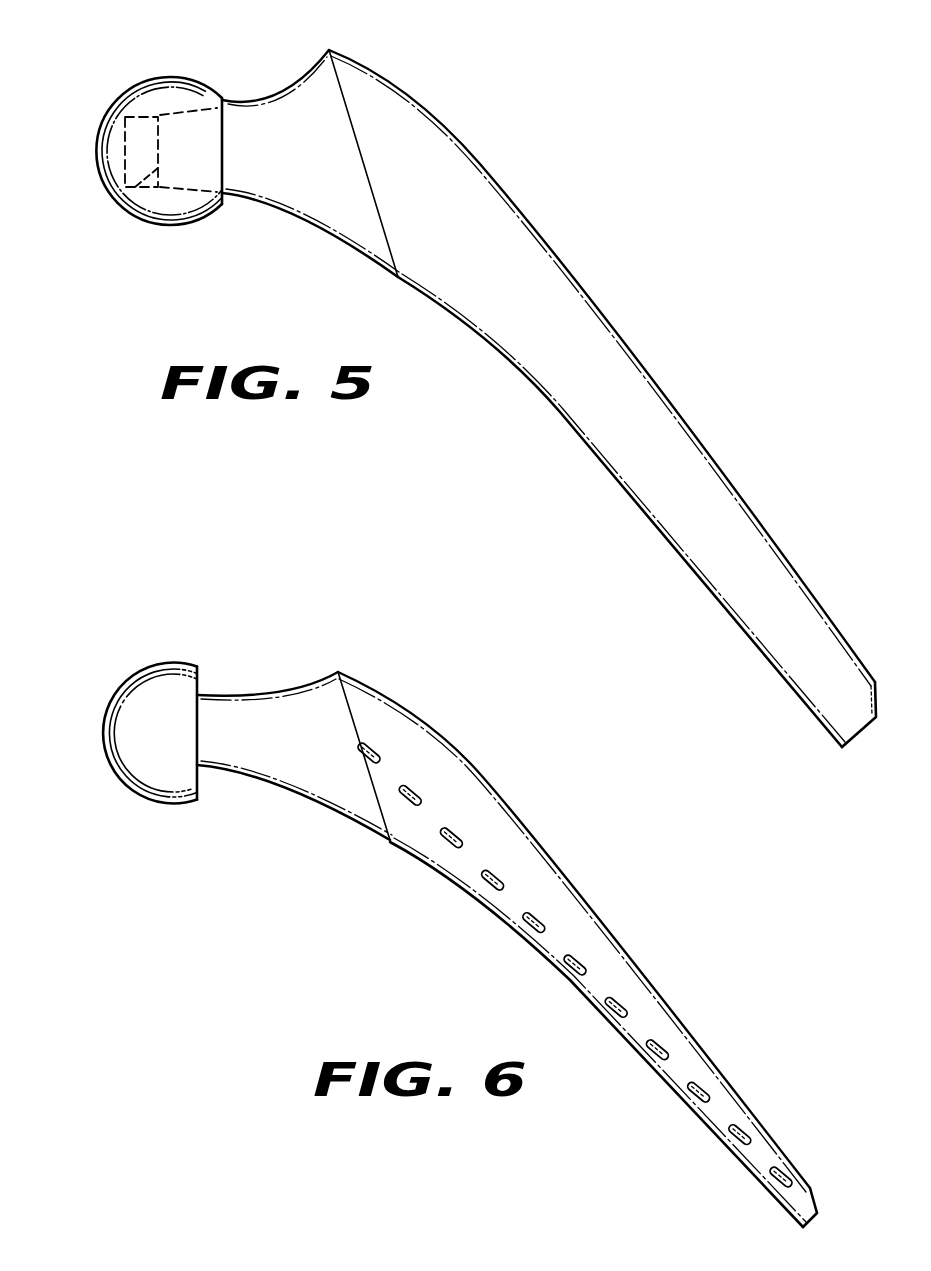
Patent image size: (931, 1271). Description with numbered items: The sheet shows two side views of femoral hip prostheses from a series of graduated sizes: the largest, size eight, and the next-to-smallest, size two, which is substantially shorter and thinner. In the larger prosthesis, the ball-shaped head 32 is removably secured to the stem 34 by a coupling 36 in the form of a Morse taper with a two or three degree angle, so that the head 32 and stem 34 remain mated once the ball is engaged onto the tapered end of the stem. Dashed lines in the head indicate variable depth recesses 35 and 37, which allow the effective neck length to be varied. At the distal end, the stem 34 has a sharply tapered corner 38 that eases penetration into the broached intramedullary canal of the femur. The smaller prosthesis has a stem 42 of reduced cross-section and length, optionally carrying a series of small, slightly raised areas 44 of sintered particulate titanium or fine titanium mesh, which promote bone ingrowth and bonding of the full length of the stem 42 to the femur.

In FIG. 5, the head 32 is at (133, 87).
In FIG. 5, the stem 34 is at (410, 97).
In FIG. 5, the variable depth recess 35 is at (127, 142).
In FIG. 5, the coupling 36 is at (184, 193).
In FIG. 5, the variable depth recess 37 is at (116, 208).
In FIG. 5, the sharply tapered corner 38 is at (880, 700).
In FIG. 6, the stem 42 is at (560, 868).
In FIG. 6, the areas of titanium mesh or sintered particulate titanium 44 is at (498, 891).